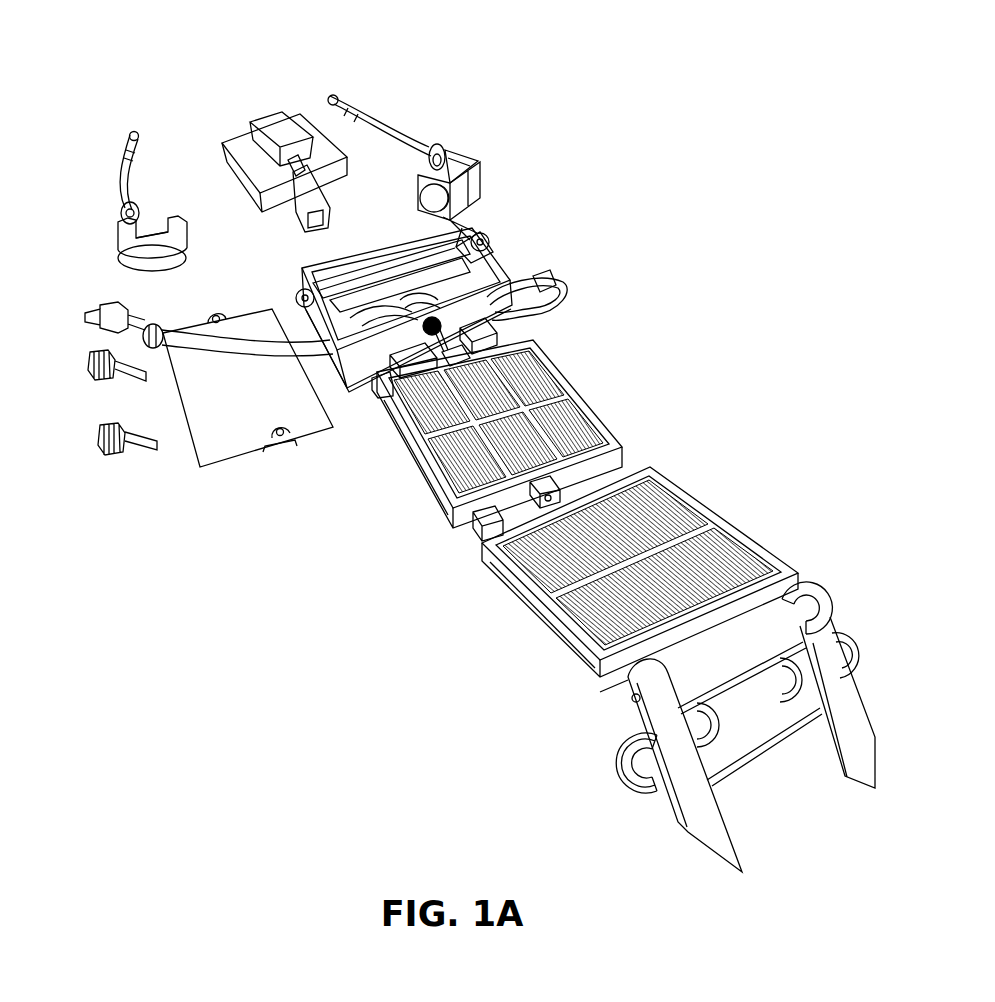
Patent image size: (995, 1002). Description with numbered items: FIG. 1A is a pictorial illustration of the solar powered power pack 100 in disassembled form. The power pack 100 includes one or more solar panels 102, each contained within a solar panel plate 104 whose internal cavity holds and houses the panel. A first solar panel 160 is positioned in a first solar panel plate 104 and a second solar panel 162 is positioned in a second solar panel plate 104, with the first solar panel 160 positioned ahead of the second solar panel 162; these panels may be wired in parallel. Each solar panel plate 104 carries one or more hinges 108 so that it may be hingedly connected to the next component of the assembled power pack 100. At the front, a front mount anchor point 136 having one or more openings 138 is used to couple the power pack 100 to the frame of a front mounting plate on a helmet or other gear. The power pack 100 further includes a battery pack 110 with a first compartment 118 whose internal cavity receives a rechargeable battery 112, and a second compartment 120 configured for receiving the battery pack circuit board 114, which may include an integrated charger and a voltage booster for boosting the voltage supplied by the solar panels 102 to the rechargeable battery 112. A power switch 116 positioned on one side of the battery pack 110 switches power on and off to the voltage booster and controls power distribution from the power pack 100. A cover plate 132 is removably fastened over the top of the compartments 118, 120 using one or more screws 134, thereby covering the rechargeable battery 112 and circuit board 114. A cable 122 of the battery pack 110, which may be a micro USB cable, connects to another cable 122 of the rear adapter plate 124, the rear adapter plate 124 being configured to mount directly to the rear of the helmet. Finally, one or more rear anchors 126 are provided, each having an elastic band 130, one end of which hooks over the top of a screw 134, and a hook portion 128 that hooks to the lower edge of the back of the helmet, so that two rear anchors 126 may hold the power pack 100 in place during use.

The solar powered power pack 100 is at (682, 119).
The solar panel 102 is at (573, 413).
The solar panel plate 104 is at (410, 505).
The hinge 108 is at (478, 340).
The battery pack 110 is at (292, 268).
The rechargeable battery 112 is at (483, 197).
The battery pack circuit board 114 is at (484, 292).
The power switch 116 is at (455, 332).
The first compartment 118 is at (481, 255).
The second compartment 120 is at (345, 390).
The cable 122 is at (287, 177).
The rear adapter plate 124 is at (326, 152).
The rear anchor 126 is at (360, 100).
The hook portion 128 is at (455, 147).
The elastic band 130 is at (395, 127).
The cover plate 132 is at (207, 448).
The screw 134 is at (82, 365).
The front mount anchor point 136 is at (797, 648).
The opening 138 is at (773, 685).
The first solar panel 160 is at (540, 635).
The second solar panel 162 is at (388, 448).